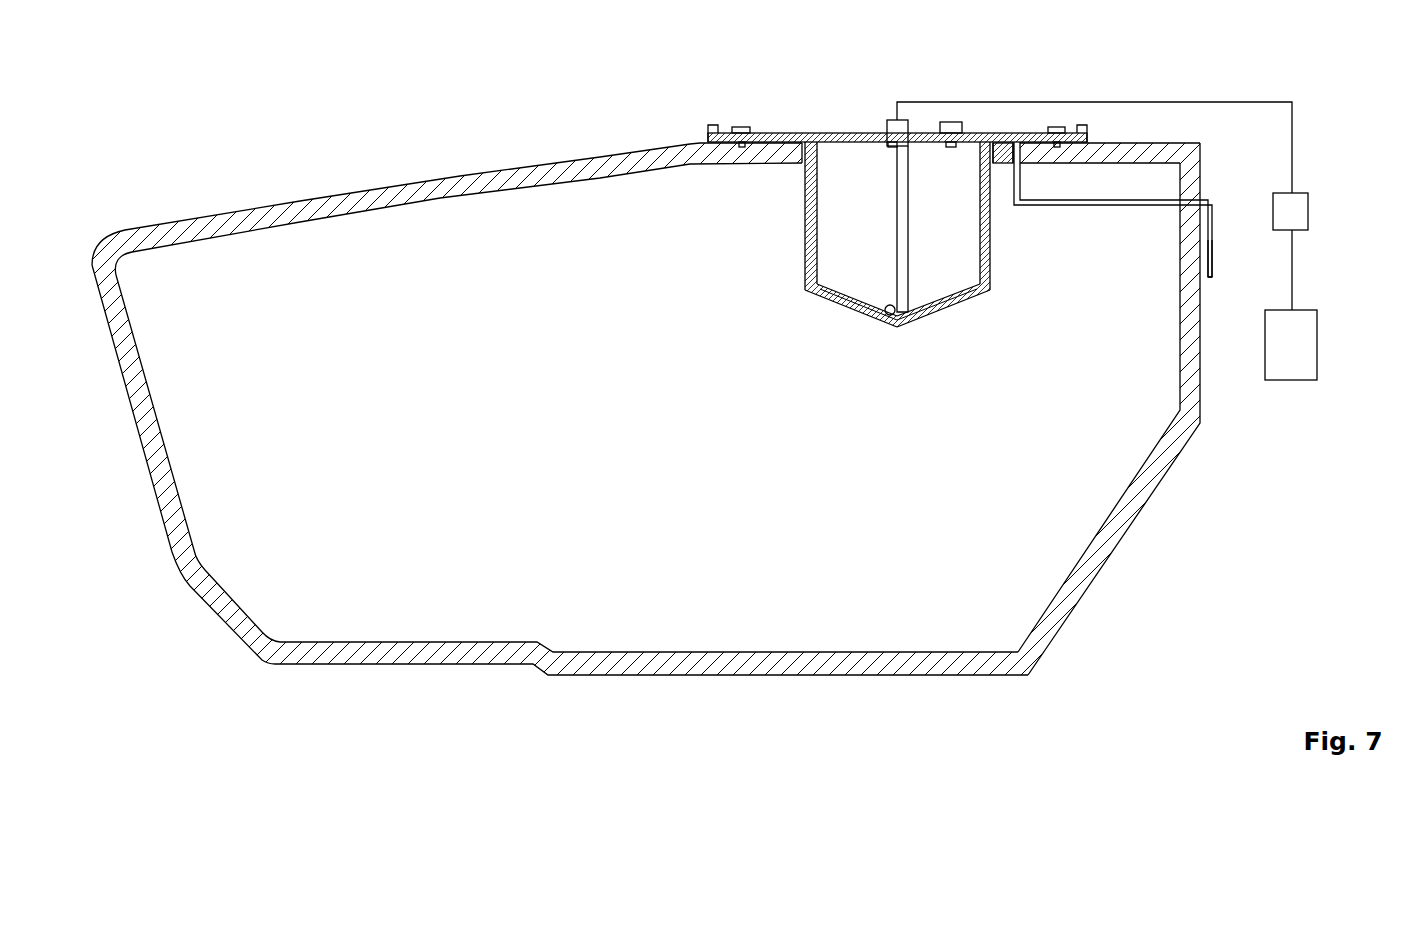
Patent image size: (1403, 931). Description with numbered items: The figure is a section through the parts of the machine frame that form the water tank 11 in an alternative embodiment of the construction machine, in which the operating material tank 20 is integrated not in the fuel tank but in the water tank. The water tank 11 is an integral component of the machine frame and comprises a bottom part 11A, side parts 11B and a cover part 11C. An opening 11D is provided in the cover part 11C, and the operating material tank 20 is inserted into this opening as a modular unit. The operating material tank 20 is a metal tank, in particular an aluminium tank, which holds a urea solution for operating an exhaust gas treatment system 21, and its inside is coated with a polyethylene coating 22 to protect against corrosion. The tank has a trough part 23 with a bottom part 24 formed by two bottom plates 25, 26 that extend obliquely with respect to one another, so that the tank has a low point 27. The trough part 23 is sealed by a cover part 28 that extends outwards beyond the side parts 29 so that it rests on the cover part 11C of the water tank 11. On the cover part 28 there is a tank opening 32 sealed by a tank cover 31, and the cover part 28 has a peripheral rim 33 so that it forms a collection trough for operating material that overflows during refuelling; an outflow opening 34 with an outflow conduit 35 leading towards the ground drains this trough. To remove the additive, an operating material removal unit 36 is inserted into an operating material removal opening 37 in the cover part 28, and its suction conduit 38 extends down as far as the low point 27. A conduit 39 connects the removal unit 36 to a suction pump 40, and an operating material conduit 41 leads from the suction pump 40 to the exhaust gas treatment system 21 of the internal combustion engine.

The water tank 11 is at (284, 180).
The bottom part 11A is at (722, 676).
The side parts 11B is at (135, 404).
The cover part 11C is at (485, 172).
The opening 11D is at (808, 135).
The operating material tank 20 is at (887, 268).
The exhaust gas treatment system 21 is at (1317, 350).
The polyethylene coating 22 is at (978, 235).
The trough part 23 is at (798, 258).
The bottom part 24 is at (975, 307).
The bottom plate 25 is at (853, 305).
The bottom plate 26 is at (945, 308).
The low point 27 is at (888, 318).
The cover part 28 is at (855, 132).
The side parts 29 is at (803, 210).
The tank cover 31 is at (952, 122).
The tank opening 32 is at (951, 148).
The peripheral rim 33 is at (712, 125).
The outflow opening 34 is at (1018, 133).
The outflow conduit 35 is at (1212, 262).
The operating material removal unit 36 is at (892, 148).
The operating material removal opening 37 is at (892, 120).
The suction conduit 38 is at (897, 258).
The conduit 39 is at (1172, 102).
The suction pump 40 is at (1308, 213).
The operating material conduit 41 is at (1292, 255).